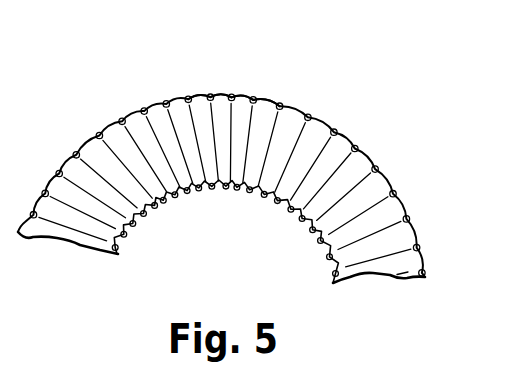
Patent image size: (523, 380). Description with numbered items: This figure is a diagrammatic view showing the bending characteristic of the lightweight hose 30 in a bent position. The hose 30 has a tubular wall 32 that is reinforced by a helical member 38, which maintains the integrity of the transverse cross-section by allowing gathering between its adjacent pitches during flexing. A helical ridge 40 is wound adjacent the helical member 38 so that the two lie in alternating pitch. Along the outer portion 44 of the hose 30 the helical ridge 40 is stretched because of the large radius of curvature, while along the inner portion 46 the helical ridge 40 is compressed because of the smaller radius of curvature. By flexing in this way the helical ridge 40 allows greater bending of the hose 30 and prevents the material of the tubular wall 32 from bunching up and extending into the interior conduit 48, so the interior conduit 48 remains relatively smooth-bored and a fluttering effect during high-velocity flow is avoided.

The lightweight hose 30 is at (102, 92).
The tubular wall 32 is at (153, 103).
The helical member 38 is at (279, 105).
The helical ridge 40 is at (335, 131).
The outer portion 44 is at (242, 84).
The inner portion 46 is at (273, 213).
The interior conduit 48 is at (375, 189).